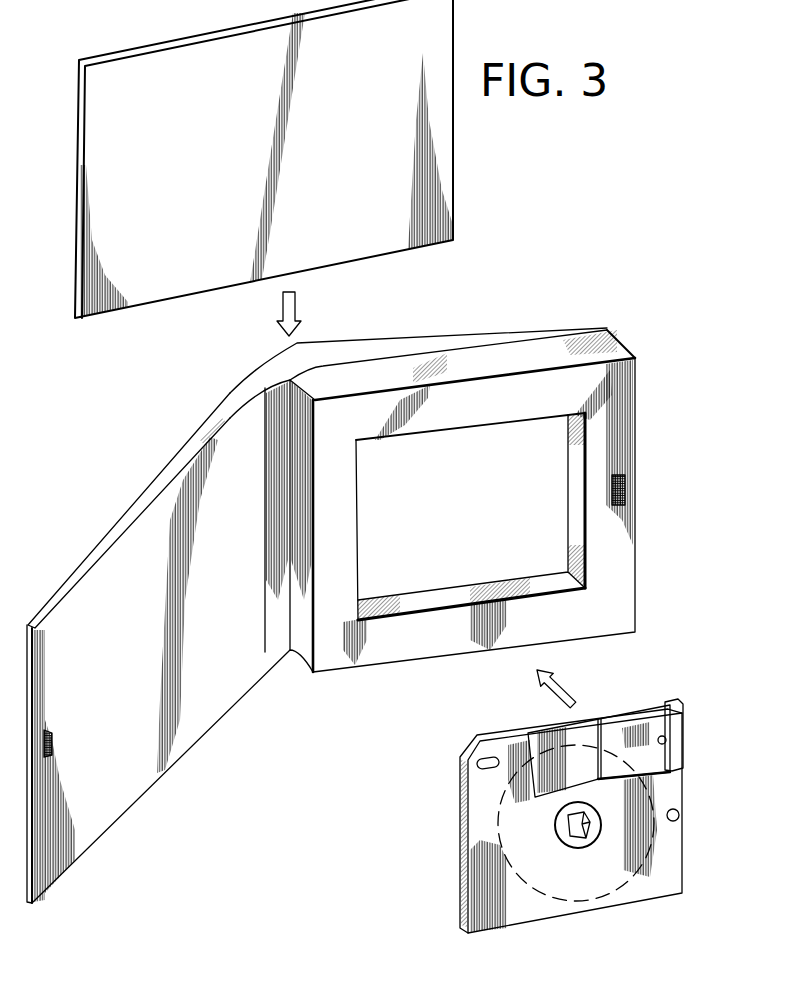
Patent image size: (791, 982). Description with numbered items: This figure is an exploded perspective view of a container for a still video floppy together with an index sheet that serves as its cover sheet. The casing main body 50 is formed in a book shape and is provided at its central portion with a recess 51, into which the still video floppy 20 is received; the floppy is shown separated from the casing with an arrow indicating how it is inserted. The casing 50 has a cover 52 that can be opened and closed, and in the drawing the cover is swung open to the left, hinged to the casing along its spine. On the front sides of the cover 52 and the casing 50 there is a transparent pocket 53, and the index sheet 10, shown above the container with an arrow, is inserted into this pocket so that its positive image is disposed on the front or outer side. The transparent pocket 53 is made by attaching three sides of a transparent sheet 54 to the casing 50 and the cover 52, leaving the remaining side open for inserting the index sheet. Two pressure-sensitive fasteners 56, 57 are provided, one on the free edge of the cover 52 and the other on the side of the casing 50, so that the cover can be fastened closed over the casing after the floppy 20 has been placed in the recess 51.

The index sheet 10 is at (440, 170).
The still video floppy 20 is at (482, 862).
The casing main body 50 is at (607, 382).
The recess 51 is at (430, 577).
The cover 52 is at (195, 717).
The transparent pocket 53 is at (352, 357).
The transparent sheet 54 is at (118, 513).
The pressure-sensitive fastener 56 is at (55, 738).
The pressure-sensitive fastener 57 is at (626, 492).